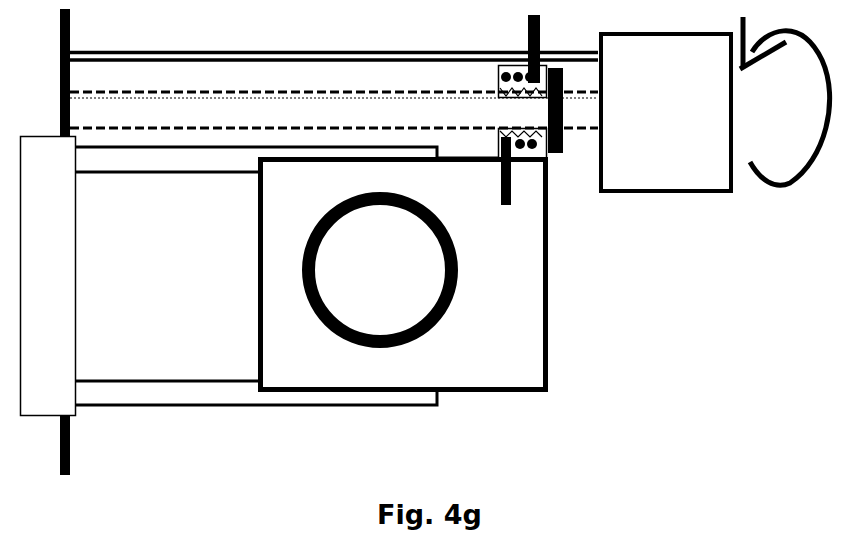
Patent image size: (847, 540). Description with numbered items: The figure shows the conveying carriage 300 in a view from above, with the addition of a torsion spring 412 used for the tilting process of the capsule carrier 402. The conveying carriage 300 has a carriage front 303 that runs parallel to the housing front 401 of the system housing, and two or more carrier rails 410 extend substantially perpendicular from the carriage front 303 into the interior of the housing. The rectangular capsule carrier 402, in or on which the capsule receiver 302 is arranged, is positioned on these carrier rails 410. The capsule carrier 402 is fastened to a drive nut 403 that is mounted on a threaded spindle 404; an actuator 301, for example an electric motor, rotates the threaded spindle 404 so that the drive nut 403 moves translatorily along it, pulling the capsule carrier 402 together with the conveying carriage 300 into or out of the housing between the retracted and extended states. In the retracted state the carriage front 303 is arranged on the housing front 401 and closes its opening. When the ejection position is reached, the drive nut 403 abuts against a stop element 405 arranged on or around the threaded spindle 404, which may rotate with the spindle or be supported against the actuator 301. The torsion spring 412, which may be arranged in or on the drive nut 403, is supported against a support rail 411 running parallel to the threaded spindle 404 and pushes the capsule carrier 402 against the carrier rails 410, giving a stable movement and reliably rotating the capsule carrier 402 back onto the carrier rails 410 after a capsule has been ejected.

The conveying carriage 300 is at (430, 422).
The actuator 301 is at (697, 183).
The capsule receiver 302 is at (318, 264).
The carriage front 303 is at (40, 410).
The housing front 401 is at (72, 24).
The capsule carrier 402 is at (525, 285).
The drive nut 403 is at (498, 72).
The threaded spindle 404 is at (292, 88).
The stop element 405 is at (553, 70).
The carrier rails 410 is at (149, 163).
The support rail 411 is at (383, 40).
The torsion spring 412 is at (518, 162).